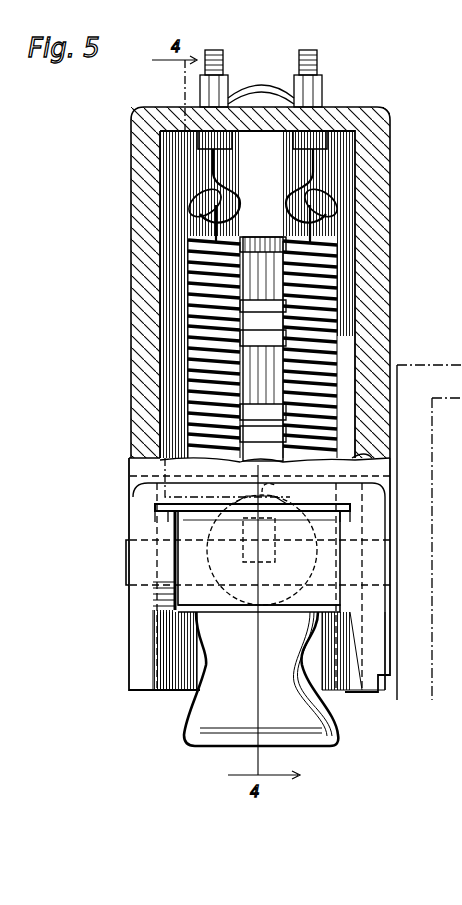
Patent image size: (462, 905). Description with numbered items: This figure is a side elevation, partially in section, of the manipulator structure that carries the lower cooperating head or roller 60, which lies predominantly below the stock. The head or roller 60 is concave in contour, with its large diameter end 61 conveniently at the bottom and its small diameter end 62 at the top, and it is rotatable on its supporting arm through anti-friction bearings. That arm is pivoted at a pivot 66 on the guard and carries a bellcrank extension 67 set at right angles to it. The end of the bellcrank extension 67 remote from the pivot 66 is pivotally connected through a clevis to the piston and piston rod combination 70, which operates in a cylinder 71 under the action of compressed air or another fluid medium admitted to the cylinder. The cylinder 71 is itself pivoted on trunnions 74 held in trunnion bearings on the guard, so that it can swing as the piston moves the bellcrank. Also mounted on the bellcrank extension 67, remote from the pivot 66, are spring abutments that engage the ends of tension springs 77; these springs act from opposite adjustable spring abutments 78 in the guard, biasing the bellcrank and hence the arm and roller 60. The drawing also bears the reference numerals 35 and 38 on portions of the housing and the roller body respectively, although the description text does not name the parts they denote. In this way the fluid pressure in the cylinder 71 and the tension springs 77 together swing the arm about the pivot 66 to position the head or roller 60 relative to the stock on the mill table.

The housing 35 is at (388, 253).
The shaft body 38 is at (203, 677).
The head or roller 60 is at (261, 679).
The large diameter end 61 is at (190, 742).
The small diameter end 62 is at (196, 622).
The pivot 66 is at (127, 553).
The bellcrank extension 67 is at (170, 582).
The piston and piston rod combination 70 is at (160, 477).
The cylinder 71 is at (330, 212).
The trunnions 74 is at (131, 316).
The tension springs 77 is at (338, 279).
The adjustable spring abutments 78 is at (330, 84).